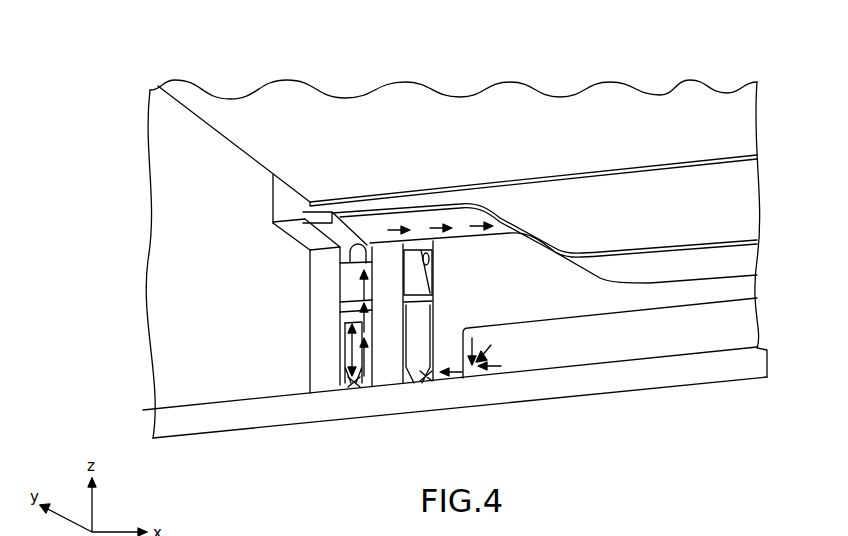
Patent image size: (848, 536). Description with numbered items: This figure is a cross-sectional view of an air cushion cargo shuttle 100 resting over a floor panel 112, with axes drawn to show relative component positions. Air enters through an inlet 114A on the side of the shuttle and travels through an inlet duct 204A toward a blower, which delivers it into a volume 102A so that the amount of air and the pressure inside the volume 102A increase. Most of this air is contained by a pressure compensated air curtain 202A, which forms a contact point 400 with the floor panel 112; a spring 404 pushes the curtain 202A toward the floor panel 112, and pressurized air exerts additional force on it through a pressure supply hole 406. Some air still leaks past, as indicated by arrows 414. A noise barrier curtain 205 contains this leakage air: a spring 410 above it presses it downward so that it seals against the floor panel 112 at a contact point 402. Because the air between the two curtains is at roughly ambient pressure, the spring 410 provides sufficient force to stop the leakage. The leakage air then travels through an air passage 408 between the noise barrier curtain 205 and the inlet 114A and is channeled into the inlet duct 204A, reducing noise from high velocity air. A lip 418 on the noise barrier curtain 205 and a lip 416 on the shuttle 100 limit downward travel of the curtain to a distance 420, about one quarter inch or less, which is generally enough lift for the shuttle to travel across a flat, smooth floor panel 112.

The air cushion cargo shuttle 100 is at (728, 72).
The floor panel 112 is at (223, 400).
The inlet 114A is at (284, 207).
The inlet duct 204A is at (743, 213).
The volume 102A is at (735, 333).
The spring 410 is at (356, 254).
The air passage 408 is at (363, 302).
The lip 418 is at (347, 320).
The lip 416 is at (363, 387).
The distance 420 is at (347, 380).
The contact point 402 is at (347, 390).
The noise barrier curtain 205 is at (358, 388).
The pressure supply hole 406 is at (430, 268).
The spring 404 is at (428, 292).
The contact point 400 is at (418, 384).
The pressure compensated air curtain 202A is at (428, 380).
The arrows 414 is at (498, 343).